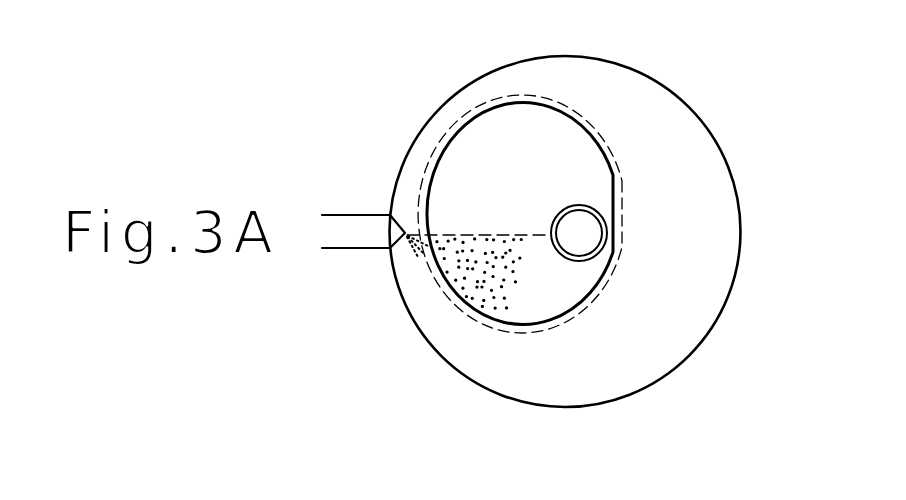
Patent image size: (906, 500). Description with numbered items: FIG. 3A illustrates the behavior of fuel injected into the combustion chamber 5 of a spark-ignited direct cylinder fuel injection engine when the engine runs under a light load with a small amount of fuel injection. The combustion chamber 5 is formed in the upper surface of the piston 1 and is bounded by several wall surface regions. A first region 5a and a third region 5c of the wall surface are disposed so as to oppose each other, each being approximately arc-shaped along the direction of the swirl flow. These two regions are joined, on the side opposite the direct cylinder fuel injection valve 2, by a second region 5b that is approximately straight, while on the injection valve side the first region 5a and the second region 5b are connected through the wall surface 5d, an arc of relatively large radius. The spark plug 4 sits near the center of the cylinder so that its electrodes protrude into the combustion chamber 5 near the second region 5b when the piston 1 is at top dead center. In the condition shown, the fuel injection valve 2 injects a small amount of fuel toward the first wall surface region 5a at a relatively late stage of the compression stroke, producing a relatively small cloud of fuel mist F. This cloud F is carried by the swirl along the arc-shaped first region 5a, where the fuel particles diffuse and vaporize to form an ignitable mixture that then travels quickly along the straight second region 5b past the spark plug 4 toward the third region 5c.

The piston 1 is at (657, 347).
The direct cylinder fuel injection valve 2 is at (351, 212).
The spark plug 4 is at (588, 206).
The combustion chamber 5 is at (522, 137).
The first region of the wall surface 5a is at (551, 331).
The second region of the wall surface 5b is at (626, 246).
The third region of the wall surface 5c is at (584, 106).
The wall surface 5d is at (462, 132).
The cloud of fuel mist F is at (485, 287).